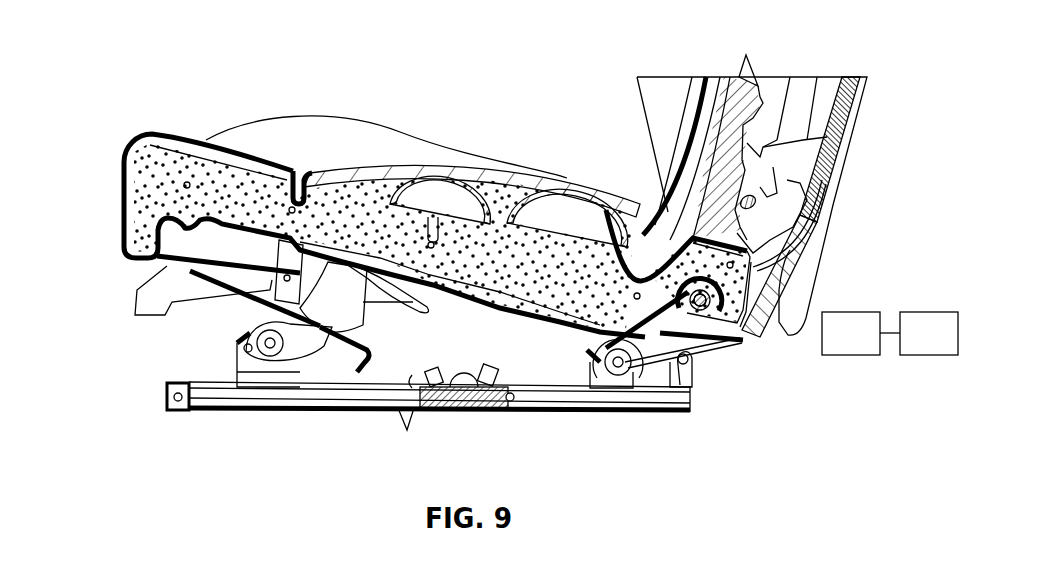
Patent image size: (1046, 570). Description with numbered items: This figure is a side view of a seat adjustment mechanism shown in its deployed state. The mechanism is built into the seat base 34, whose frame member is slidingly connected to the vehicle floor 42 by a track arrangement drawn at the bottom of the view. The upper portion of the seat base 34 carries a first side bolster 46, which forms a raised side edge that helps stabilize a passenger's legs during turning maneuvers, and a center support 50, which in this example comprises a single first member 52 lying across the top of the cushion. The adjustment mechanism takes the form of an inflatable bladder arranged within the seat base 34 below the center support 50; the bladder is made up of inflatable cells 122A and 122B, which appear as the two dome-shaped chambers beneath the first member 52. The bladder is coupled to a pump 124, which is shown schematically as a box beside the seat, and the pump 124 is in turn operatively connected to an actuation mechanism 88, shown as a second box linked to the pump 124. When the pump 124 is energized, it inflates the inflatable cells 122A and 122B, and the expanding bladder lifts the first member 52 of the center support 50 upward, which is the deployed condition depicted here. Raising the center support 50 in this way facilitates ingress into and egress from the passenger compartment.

The seat base 34 is at (112, 205).
The vehicle floor 42 is at (176, 384).
The first side bolster 46 is at (262, 121).
The center support 50 is at (368, 143).
The first member 52 is at (405, 167).
The inflatable cell 122A is at (452, 193).
The inflatable cell 122B is at (580, 217).
The pump 124 is at (737, 327).
The actuation mechanism 88 is at (944, 348).